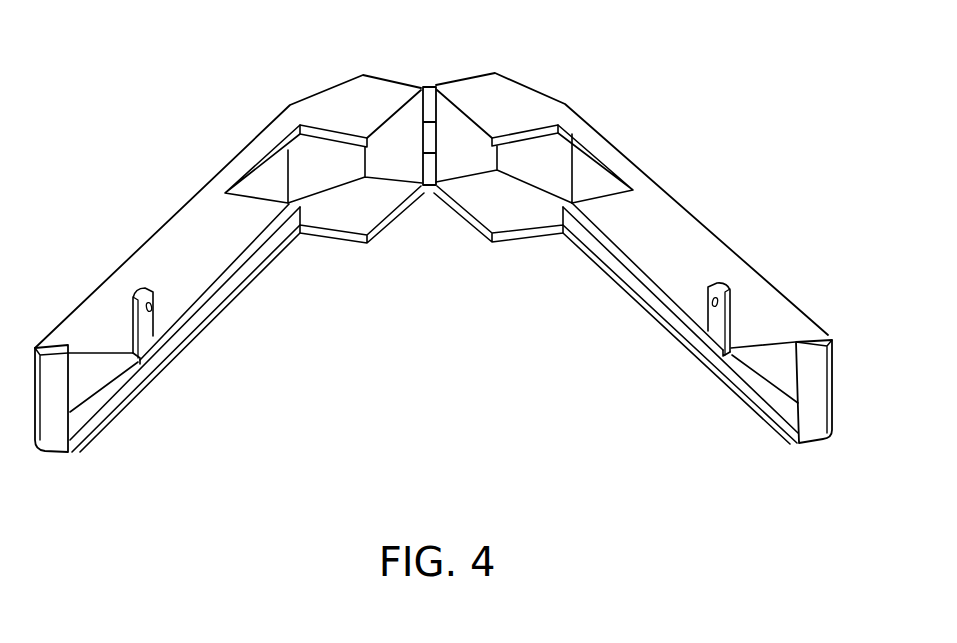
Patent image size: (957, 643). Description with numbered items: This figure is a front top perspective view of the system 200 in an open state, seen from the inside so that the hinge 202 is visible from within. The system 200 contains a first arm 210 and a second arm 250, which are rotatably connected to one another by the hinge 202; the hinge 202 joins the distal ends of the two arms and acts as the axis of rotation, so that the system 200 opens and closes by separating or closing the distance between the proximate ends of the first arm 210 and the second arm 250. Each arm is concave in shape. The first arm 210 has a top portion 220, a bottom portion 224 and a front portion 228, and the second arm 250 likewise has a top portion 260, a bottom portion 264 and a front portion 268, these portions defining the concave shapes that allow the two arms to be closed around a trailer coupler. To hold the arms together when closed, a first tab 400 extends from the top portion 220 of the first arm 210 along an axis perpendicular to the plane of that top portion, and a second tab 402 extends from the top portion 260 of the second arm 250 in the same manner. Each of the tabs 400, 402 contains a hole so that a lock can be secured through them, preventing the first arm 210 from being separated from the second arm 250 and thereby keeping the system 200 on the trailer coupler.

The system 200 is at (663, 466).
The hinge 202 is at (427, 86).
The first arm 210 is at (205, 273).
The top portion 220 is at (156, 249).
The bottom portion 224 is at (97, 406).
The front portion 228 is at (53, 428).
The second arm 250 is at (697, 266).
The top portion 260 is at (647, 202).
The bottom portion 264 is at (768, 394).
The front portion 268 is at (818, 395).
The first tab 400 is at (149, 328).
The second tab 402 is at (712, 318).